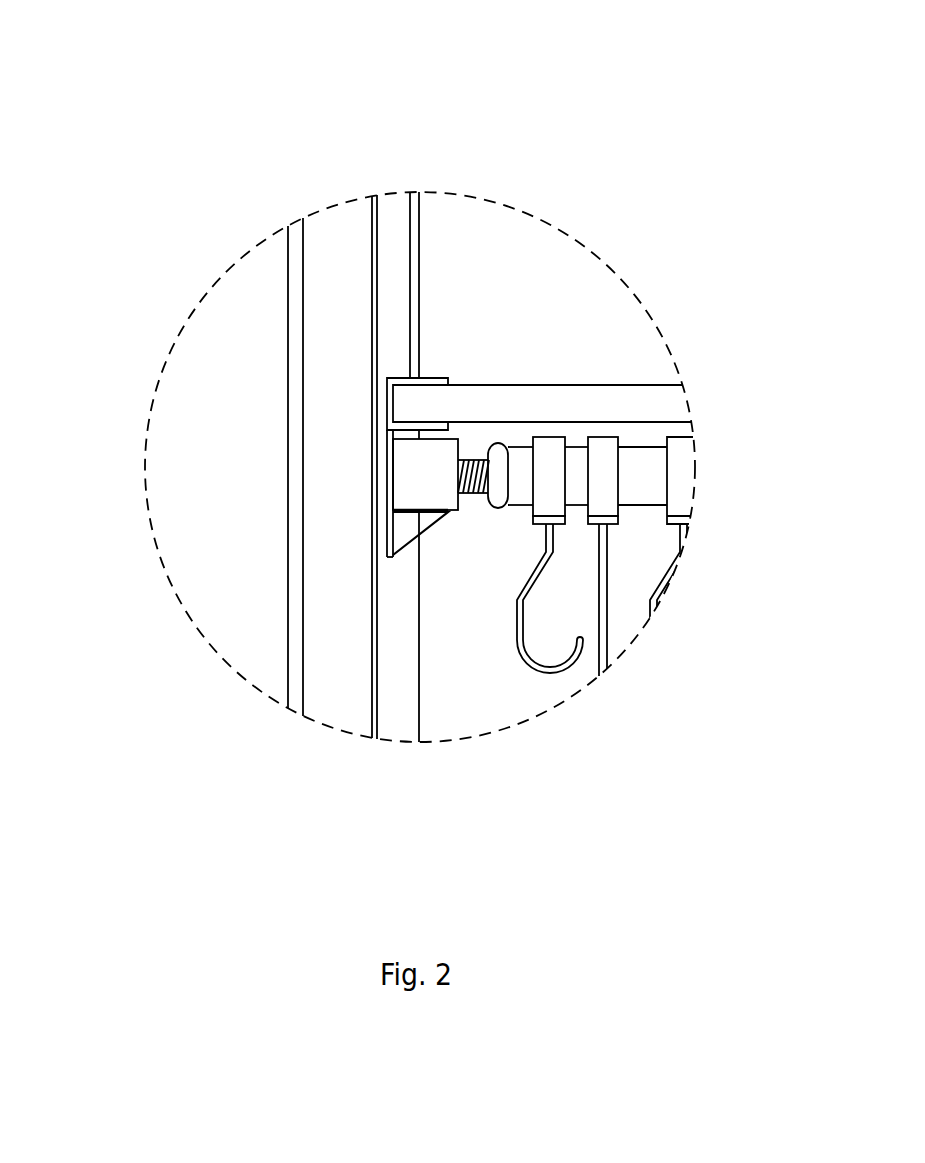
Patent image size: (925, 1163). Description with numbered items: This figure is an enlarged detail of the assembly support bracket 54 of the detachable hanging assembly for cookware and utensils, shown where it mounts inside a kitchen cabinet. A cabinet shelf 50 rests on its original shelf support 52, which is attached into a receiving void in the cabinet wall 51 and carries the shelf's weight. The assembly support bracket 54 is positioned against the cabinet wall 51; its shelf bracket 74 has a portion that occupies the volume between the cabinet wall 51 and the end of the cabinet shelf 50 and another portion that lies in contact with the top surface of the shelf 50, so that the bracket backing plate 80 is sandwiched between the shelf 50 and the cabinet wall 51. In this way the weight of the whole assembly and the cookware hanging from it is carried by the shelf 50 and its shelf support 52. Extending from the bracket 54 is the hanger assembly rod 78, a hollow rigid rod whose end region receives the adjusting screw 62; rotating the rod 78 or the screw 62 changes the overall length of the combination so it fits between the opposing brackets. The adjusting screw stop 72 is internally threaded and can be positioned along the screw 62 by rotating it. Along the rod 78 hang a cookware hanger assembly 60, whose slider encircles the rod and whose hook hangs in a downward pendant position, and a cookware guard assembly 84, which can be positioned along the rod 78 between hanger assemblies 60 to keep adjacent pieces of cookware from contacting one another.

The cabinet shelf 50 is at (503, 407).
The cabinet wall 51 is at (335, 240).
The shelf support 52 is at (400, 428).
The assembly support bracket 54 is at (380, 512).
The cookware hanger assembly 60 is at (548, 477).
The adjusting screw 62 is at (476, 493).
The adjusting screw stop 72 is at (498, 477).
The shelf bracket 74 is at (410, 253).
The hanger assembly rod 78 is at (643, 468).
The bracket backing plate 80 is at (400, 403).
The cookware guard assembly 84 is at (607, 479).